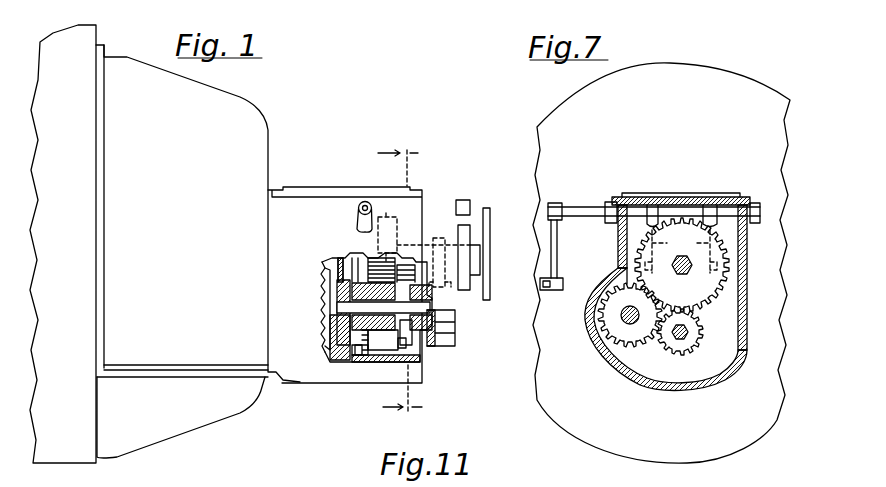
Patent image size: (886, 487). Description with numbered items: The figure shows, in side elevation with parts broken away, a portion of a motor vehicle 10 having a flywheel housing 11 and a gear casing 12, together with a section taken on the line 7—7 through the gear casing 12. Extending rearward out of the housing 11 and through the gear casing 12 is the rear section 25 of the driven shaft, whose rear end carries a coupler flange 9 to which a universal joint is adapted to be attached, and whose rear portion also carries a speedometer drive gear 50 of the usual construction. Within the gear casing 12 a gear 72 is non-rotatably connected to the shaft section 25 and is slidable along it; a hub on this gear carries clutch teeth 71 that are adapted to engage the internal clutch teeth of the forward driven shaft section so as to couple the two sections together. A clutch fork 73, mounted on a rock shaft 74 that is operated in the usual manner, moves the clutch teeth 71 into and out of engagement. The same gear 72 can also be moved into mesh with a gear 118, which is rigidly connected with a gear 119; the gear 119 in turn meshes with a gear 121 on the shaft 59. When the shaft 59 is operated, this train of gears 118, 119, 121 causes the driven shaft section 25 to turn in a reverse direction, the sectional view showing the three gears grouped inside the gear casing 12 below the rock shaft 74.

In FIG. 1, the section line 7— 7 is at (408, 281).
In FIG. 1, the coupler flange 9 is at (487, 210).
In FIG. 1, the portion of a motor vehicle 10 is at (111, 40).
In FIG. 1, the flywheel housing 11 is at (252, 96).
In FIG. 7, the flywheel housing 11 is at (737, 97).
In FIG. 1, the gear casing 12 is at (300, 212).
In FIG. 7, the gear casing 12 is at (635, 197).
In FIG. 1, the rear section of the driven shaft 25 is at (433, 233).
In FIG. 7, the rear section of the driven shaft 25 is at (687, 277).
In FIG. 1, the speedometer drive gear 50 is at (441, 237).
In FIG. 7, the shaft 59 is at (684, 338).
In FIG. 1, the clutch teeth 71 is at (352, 257).
In FIG. 1, the gear 72 is at (398, 230).
In FIG. 7, the gear 72 is at (683, 225).
In FIG. 1, the clutch fork 73 is at (372, 252).
In FIG. 7, the clutch fork 73 is at (681, 251).
In FIG. 1, the rock shaft 74 is at (365, 202).
In FIG. 7, the rock shaft 74 is at (578, 207).
In FIG. 1, the gear 118 is at (402, 342).
In FIG. 7, the gear 118 is at (620, 325).
In FIG. 1, the gear 119 is at (355, 362).
In FIG. 7, the gear 119 is at (645, 352).
In FIG. 1, the gear 121 is at (367, 358).
In FIG. 7, the gear 121 is at (673, 358).